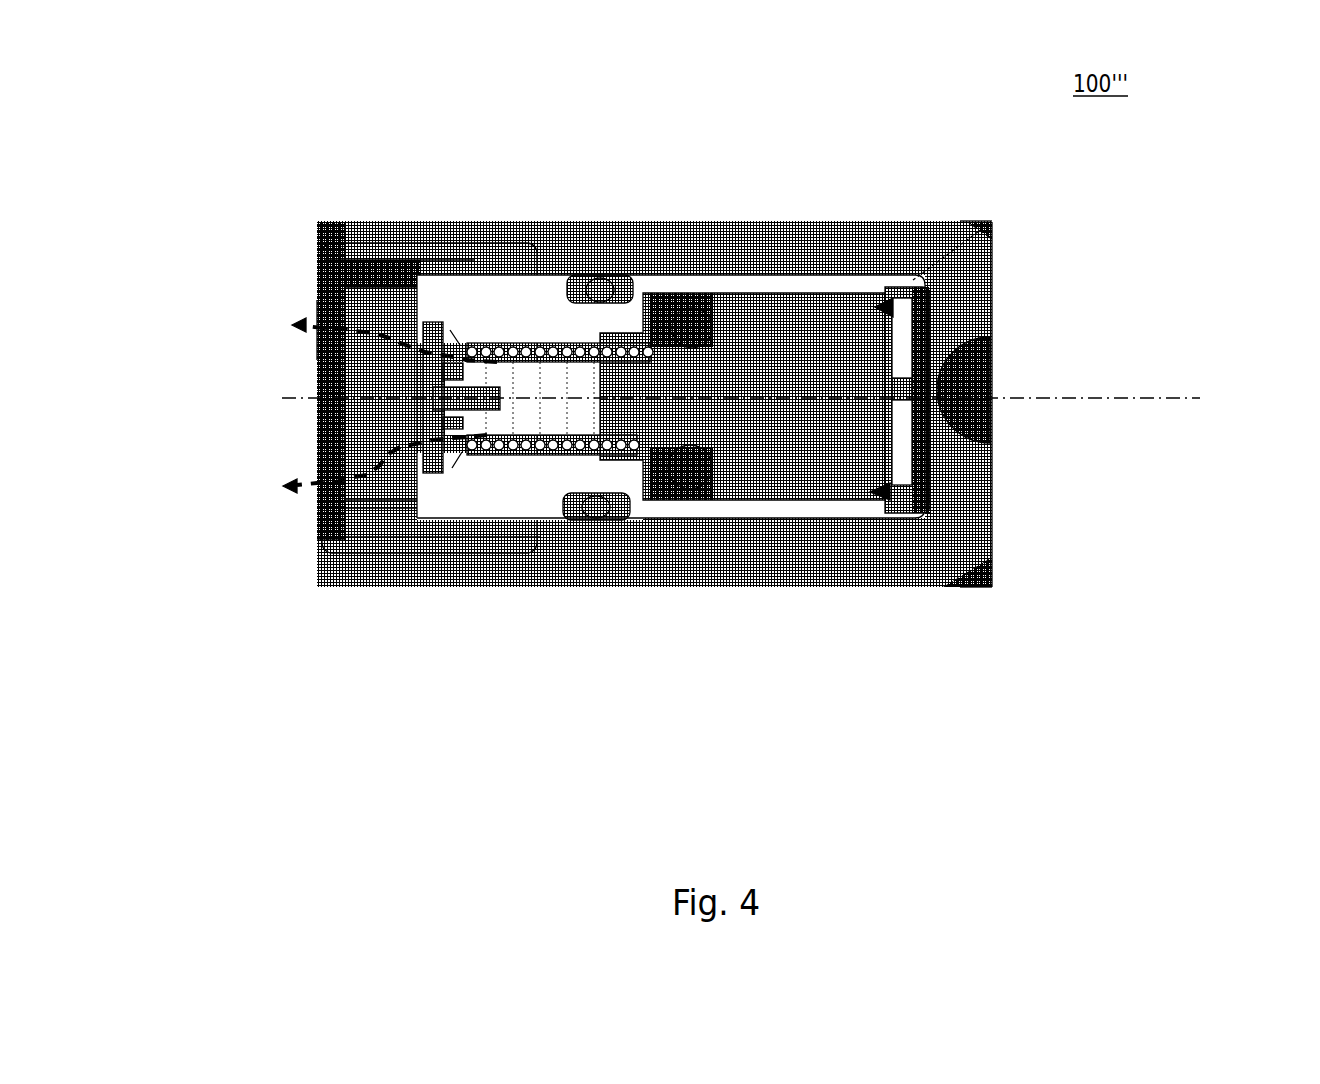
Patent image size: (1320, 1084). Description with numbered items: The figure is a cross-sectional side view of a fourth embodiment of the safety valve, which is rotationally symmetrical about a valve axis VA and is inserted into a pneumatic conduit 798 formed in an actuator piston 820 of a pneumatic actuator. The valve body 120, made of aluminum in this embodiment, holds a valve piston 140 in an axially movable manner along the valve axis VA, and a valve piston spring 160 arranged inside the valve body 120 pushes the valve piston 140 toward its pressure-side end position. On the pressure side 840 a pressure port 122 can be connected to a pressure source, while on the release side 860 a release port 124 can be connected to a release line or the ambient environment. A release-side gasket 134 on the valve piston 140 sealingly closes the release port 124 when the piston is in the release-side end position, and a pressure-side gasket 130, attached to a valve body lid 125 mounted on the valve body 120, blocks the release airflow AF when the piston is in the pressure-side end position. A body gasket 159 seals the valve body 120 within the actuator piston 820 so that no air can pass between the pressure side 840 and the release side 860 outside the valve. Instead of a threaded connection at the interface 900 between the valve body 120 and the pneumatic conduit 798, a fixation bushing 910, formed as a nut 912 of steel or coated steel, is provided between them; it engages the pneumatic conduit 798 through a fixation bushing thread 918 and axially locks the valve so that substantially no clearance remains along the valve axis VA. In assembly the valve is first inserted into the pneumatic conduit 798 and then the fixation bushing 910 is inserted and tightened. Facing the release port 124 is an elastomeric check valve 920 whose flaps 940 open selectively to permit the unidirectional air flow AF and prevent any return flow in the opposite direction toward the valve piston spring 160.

The fixation bushing thread 918 is at (392, 250).
The fixation bushing 910 is at (430, 338).
The nut 912 is at (413, 273).
The flaps 940 is at (453, 330).
The valve piston spring 160 is at (607, 352).
The actuator piston 820 is at (795, 255).
The interface 900 is at (880, 268).
The valve body 120 is at (918, 283).
The release side 860 is at (252, 322).
The air flow AF is at (320, 318).
The pressure side 840 is at (1060, 368).
The pneumatic conduit 798 is at (950, 317).
The valve axis VA is at (1143, 397).
The release port 124 is at (460, 353).
The valve piston 140 is at (803, 391).
The elastomeric check valve 920 is at (487, 397).
The pressure port 122 is at (997, 393).
The valve body lid 125 is at (893, 492).
The body gasket 159 is at (593, 510).
The release-side gasket 134 is at (700, 470).
The pressure-side gasket 130 is at (875, 492).